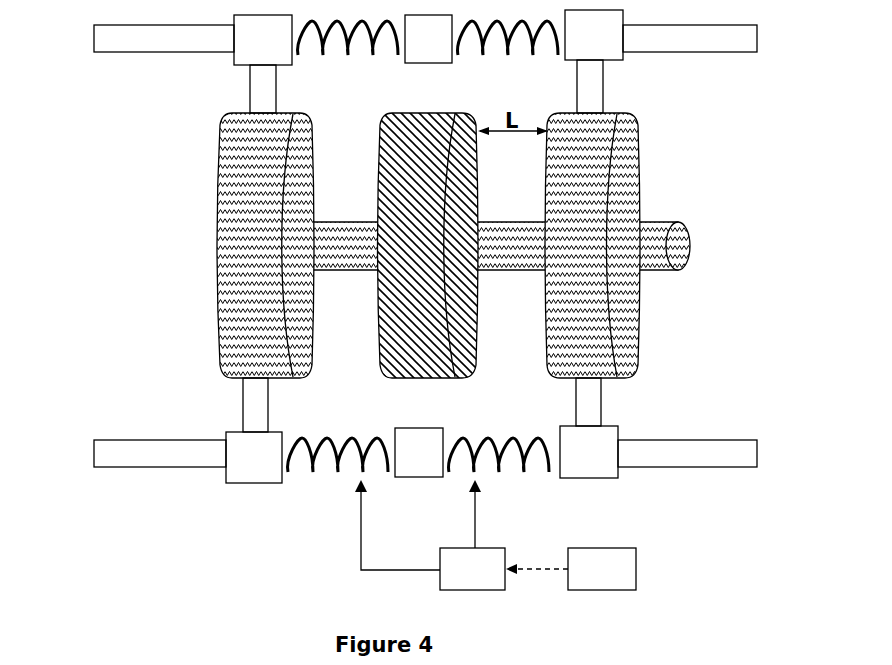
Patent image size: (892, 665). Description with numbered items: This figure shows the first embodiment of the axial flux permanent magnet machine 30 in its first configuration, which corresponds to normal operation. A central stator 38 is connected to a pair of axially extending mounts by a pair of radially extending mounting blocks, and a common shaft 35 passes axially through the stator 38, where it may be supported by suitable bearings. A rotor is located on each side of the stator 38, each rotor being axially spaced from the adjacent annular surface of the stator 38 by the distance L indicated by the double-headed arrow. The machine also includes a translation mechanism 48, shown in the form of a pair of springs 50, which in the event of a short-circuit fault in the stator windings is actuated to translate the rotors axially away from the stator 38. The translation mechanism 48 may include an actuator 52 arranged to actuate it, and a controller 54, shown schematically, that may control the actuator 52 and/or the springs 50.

The axial flux permanent magnet machine 30 is at (80, 140).
The common shaft 35 is at (690, 256).
The stator 38 is at (380, 137).
The translation mechanism 48 is at (326, 490).
The springs 50 is at (460, 440).
The actuator 52 is at (430, 535).
The controller 54 is at (571, 569).